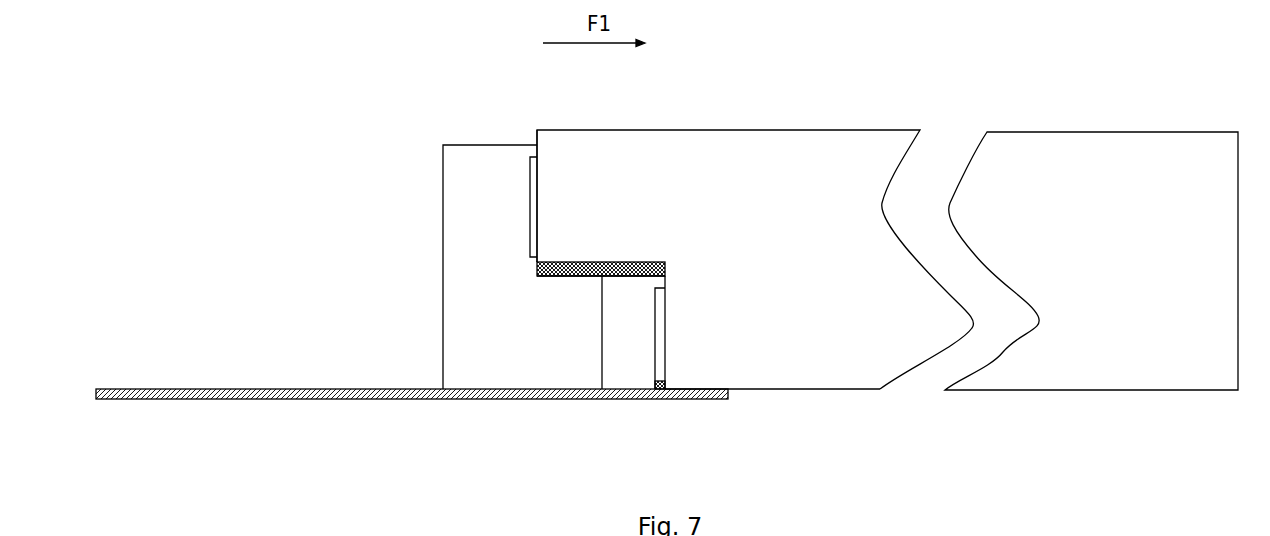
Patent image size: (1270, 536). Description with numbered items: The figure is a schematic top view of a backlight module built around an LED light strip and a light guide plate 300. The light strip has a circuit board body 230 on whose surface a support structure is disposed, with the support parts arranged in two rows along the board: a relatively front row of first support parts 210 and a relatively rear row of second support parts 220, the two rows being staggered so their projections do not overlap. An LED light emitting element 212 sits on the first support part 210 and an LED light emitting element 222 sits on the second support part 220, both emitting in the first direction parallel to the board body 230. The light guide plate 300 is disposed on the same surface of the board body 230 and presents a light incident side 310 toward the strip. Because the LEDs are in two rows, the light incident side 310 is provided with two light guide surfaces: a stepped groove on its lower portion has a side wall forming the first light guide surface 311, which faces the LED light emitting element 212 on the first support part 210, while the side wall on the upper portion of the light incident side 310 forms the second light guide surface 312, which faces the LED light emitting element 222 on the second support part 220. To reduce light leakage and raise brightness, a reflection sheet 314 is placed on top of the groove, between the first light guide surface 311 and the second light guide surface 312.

The second support part 220 is at (518, 214).
The LED light emitting element 222 is at (533, 160).
The board body 230 is at (290, 400).
The light guide plate 300 is at (852, 391).
The light incident side 310 is at (751, 266).
The first light guide surface 311 is at (667, 356).
The second light guide surface 312 is at (538, 200).
The reflection sheet 314 is at (563, 276).
The first support part 210 is at (610, 373).
The LED light emitting element 212 is at (660, 384).